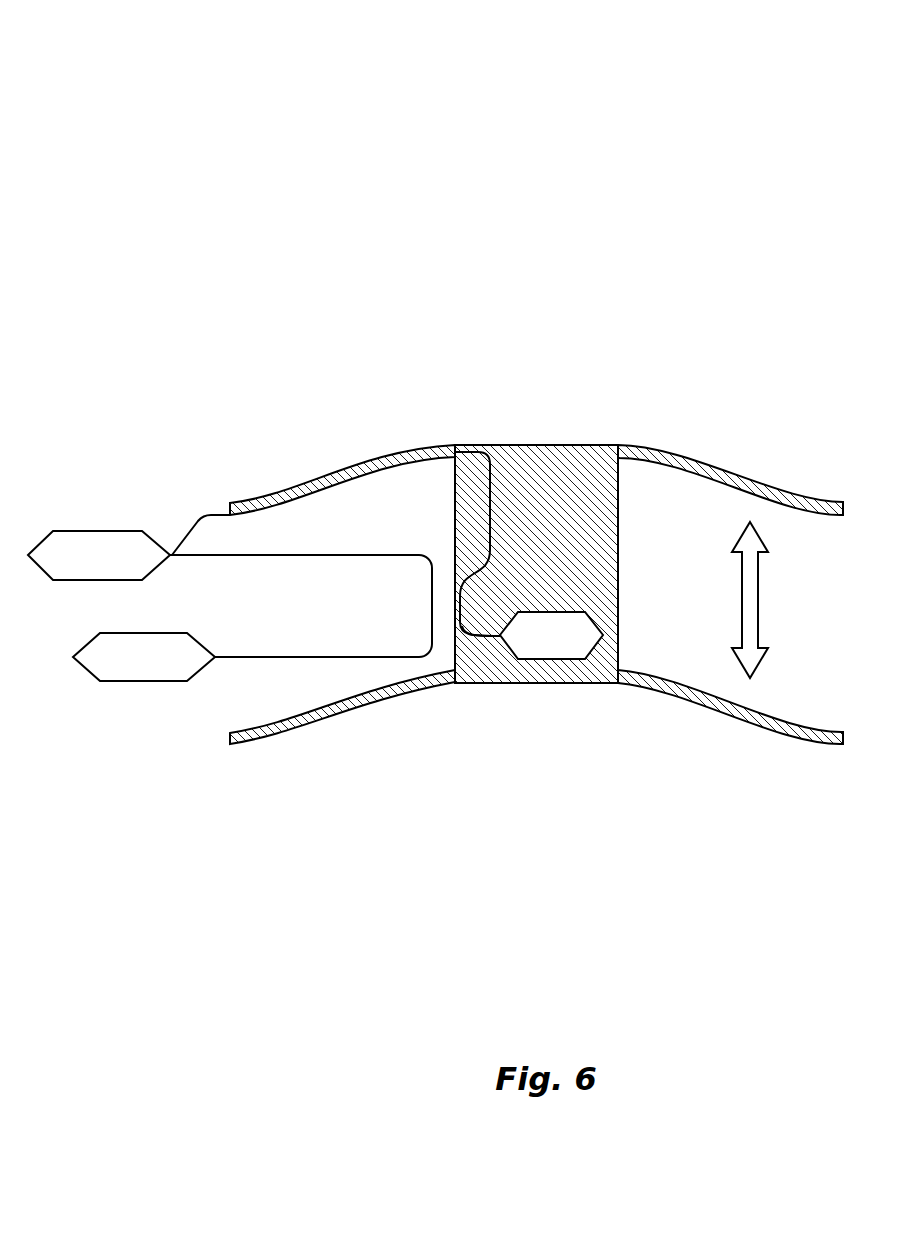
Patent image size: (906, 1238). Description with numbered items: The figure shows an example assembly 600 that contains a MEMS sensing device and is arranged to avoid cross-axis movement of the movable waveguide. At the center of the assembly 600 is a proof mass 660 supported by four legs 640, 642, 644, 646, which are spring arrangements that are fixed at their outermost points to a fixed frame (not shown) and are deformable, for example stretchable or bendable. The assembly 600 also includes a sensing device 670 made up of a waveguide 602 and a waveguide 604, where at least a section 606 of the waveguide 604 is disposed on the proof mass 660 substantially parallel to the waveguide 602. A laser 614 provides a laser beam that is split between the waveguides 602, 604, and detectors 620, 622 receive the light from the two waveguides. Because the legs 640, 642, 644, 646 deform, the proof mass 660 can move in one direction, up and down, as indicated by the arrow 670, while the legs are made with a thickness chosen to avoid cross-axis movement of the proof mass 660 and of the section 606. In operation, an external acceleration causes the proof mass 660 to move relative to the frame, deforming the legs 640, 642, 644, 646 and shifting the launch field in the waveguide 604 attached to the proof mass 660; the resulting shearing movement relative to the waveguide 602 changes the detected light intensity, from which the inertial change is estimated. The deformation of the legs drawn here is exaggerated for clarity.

The assembly 600 is at (658, 76).
The waveguide 602 is at (483, 452).
The waveguide 604 is at (248, 558).
The section 606 is at (470, 638).
The laser 614 is at (46, 530).
The detector 620 is at (73, 660).
The detector 622 is at (590, 683).
The leg 640 is at (333, 478).
The leg 642 is at (723, 468).
The leg 644 is at (347, 710).
The leg 646 is at (710, 707).
The proof mass 660 is at (563, 446).
The sensing device 670 is at (758, 603).